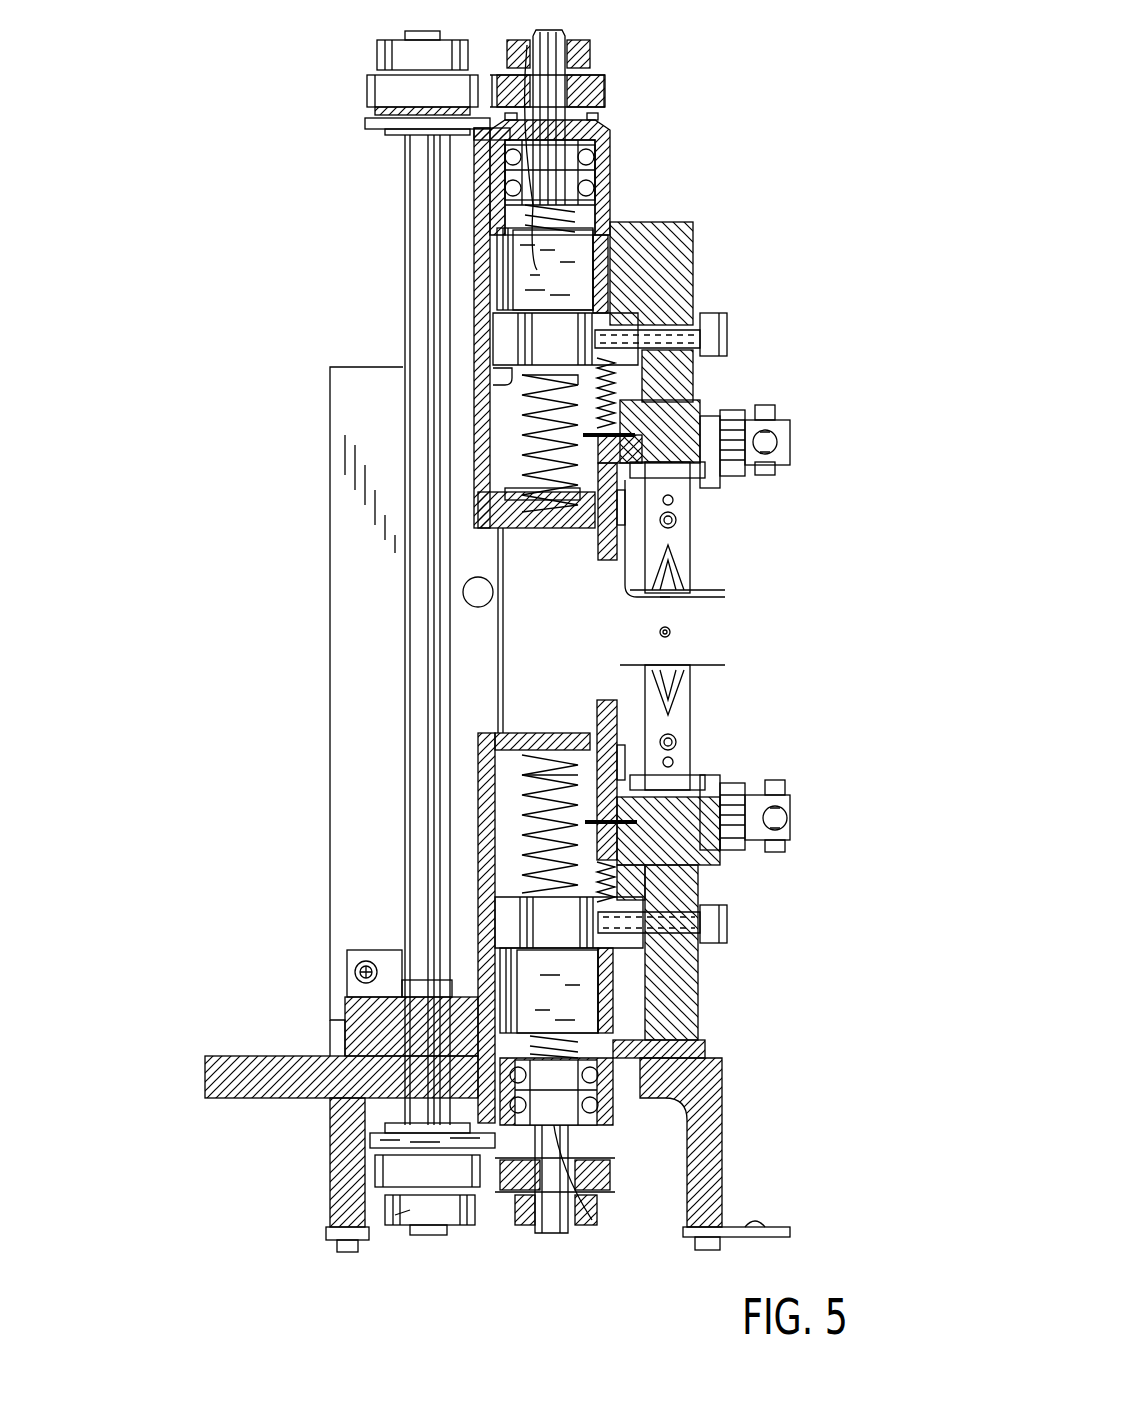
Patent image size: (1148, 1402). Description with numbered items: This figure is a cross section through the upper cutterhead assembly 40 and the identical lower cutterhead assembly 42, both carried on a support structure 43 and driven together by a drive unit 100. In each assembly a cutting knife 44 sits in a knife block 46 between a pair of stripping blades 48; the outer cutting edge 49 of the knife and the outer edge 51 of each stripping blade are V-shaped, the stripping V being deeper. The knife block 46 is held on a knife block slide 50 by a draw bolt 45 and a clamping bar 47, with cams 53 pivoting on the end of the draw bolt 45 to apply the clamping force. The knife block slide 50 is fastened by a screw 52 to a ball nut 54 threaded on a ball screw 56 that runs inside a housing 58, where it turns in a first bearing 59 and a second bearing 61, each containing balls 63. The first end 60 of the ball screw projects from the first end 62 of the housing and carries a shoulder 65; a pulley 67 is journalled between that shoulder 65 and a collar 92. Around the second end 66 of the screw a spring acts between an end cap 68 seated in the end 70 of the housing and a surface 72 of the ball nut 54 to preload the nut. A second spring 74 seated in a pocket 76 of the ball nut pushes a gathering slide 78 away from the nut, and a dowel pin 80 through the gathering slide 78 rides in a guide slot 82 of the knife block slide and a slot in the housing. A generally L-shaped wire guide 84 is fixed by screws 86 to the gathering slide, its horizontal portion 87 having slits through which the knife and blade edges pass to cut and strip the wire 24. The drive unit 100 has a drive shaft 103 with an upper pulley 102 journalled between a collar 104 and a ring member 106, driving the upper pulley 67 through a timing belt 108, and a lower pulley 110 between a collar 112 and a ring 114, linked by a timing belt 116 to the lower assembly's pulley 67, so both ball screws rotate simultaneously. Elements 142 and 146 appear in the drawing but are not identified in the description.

The wire 24 is at (672, 635).
The upper cutterhead assembly 40 is at (700, 252).
The lower cutterhead assembly 42 is at (778, 978).
The support structure 43 is at (265, 1055).
The cutting knife 44 is at (672, 614).
The draw bolt 45 is at (790, 442).
The knife block 46 is at (678, 527).
The clamping bar 47 is at (722, 478).
The stripping blades 48 is at (690, 560).
The outer cutting edge 49 is at (670, 597).
The knife block slide 50 is at (690, 225).
The outer edge of stripping blade 51 is at (690, 565).
The screw 52 is at (722, 325).
The cams 53 is at (775, 425).
The ball nut 54 is at (500, 328).
The ball screw 56 is at (600, 230).
The housing 58 is at (478, 268).
The first bearing 59 is at (500, 163).
The first end of ball screw 60 is at (560, 40).
The second bearing 61 is at (500, 190).
The first end of housing 62 is at (612, 143).
The balls 63 is at (628, 1128).
The shoulder 65 is at (548, 50).
The second end of ball screw 66 is at (530, 420).
The pulley 67 is at (505, 90).
The end cap 68 is at (510, 530).
The end of housing 70 is at (472, 508).
The surface of ball nut 72 is at (493, 372).
The second spring 74 is at (660, 410).
The pocket 76 is at (615, 385).
The gathering slide 78 is at (598, 565).
The dowel pin 80 is at (625, 435).
The guide slot 82 is at (716, 455).
The wire guide 84 is at (612, 600).
The screws 86 is at (625, 602).
The horizontal portion 87 is at (660, 598).
The collar 92 is at (590, 50).
The drive unit 100 is at (328, 918).
The upper pulley 102 is at (368, 82).
The drive shaft 103 is at (425, 670).
The collar 104 is at (378, 50).
The ring member 106 is at (368, 125).
The timing belt 108 is at (375, 111).
The lower pulley 110 is at (376, 1170).
The collar 112 is at (405, 1215).
The ring 114 is at (380, 1138).
The timing belt 116 is at (478, 1215).
The spring seat 142 is at (592, 528).
The shadow line 146 is at (485, 475).